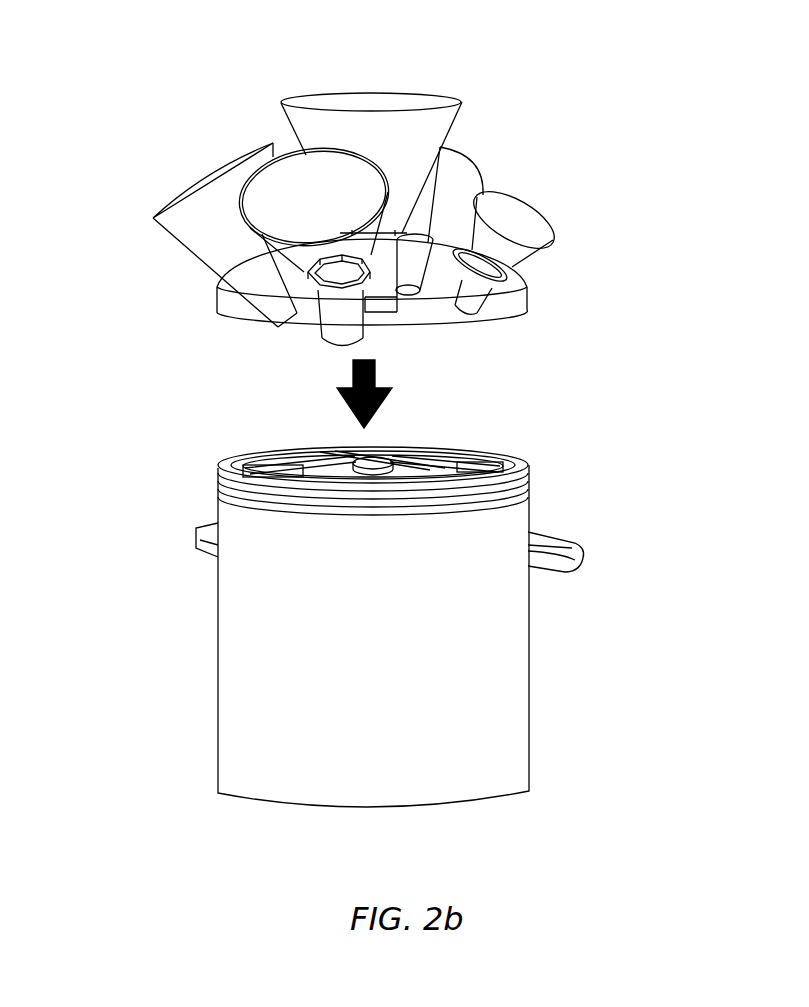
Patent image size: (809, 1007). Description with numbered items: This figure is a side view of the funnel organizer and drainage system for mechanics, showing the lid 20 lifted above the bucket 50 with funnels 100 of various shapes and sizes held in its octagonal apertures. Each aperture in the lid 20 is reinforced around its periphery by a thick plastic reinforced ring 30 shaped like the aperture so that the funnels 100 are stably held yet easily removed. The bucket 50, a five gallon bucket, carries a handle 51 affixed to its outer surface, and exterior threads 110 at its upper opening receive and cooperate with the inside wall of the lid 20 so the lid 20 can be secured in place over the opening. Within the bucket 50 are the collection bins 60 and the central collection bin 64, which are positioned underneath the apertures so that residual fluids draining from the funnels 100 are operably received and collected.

The funnel 100 is at (347, 132).
The reinforced ring 30 is at (312, 284).
The lid 20 is at (508, 302).
The collection bin 60 is at (280, 453).
The central collection bin 64 is at (438, 455).
The exterior threads 110 is at (220, 488).
The handle 51 is at (577, 543).
The bucket 50 is at (490, 673).